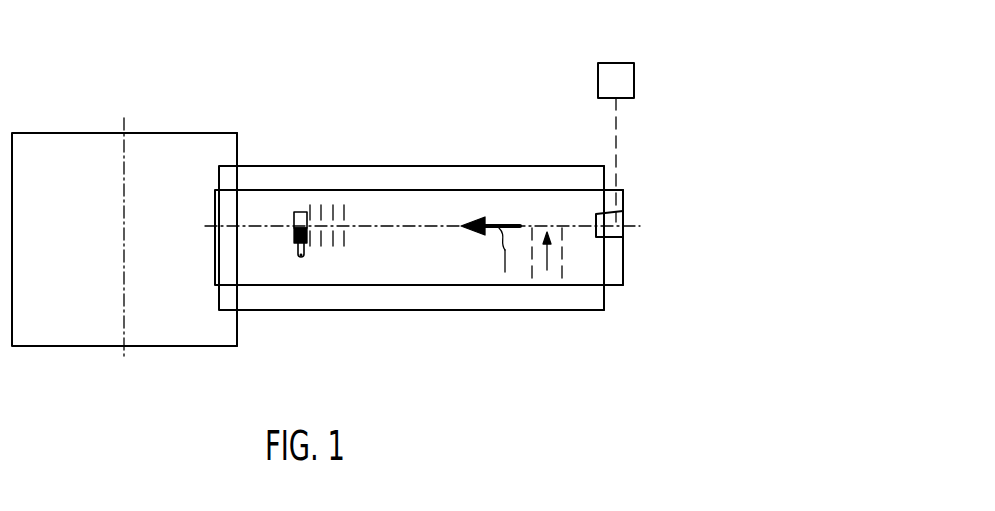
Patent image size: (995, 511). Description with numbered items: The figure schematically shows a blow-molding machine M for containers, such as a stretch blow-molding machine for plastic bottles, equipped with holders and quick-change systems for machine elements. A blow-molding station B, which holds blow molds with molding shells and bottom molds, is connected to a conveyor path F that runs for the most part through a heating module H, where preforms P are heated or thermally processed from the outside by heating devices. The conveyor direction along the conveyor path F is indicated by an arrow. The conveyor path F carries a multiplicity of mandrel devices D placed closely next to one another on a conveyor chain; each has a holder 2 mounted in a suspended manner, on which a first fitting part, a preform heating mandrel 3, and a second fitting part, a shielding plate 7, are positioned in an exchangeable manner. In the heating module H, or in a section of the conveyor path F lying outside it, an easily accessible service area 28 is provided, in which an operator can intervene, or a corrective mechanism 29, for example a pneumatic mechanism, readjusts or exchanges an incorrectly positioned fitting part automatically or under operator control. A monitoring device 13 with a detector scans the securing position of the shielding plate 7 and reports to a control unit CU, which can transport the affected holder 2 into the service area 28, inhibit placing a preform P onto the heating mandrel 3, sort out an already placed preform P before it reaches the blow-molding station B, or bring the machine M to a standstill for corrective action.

The blow-molding station B is at (172, 167).
The blow-molding machine M is at (260, 149).
The heating module H is at (430, 167).
The conveyor path F is at (373, 190).
The mandrel devices D is at (331, 205).
The holder 2 is at (294, 220).
The preform heating mandrel 3 is at (294, 236).
The shielding plate 7 is at (298, 250).
The preform P is at (305, 257).
The corrective mechanism 29 is at (539, 266).
The service area 28 is at (566, 266).
The monitoring device 13 is at (622, 215).
The control unit CU is at (608, 80).